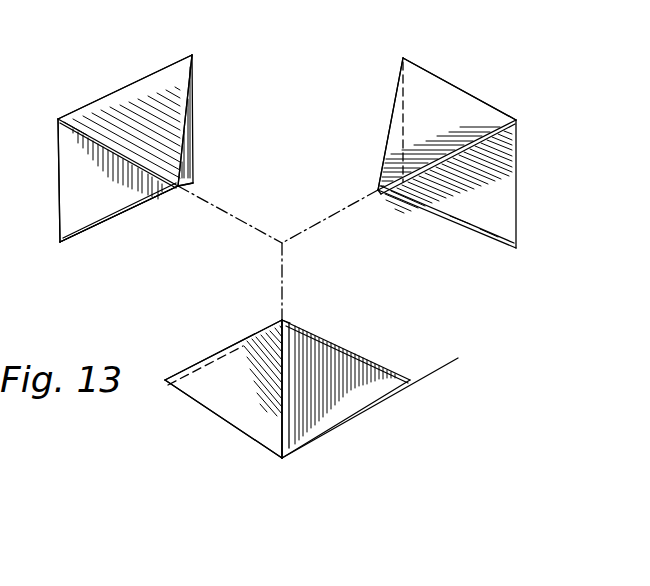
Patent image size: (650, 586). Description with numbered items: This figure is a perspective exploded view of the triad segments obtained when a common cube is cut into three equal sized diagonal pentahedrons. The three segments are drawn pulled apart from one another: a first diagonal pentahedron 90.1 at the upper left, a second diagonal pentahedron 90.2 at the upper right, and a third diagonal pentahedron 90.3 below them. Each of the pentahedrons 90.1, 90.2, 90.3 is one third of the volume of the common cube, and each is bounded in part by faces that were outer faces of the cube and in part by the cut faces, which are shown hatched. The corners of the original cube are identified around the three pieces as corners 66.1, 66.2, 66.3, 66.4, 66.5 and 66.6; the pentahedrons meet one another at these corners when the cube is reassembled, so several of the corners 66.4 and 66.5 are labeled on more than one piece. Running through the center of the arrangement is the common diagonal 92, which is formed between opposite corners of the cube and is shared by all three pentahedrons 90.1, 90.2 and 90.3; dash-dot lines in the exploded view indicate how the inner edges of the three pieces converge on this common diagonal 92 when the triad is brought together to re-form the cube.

The diagonal pentahedron 90.1 is at (68, 200).
The diagonal pentahedron 90.2 is at (450, 100).
The diagonal pentahedron 90.3 is at (350, 410).
The cube corner 66.1 is at (403, 58).
The cube corner 66.2 is at (280, 320).
The cube corner 66.3 is at (254, 288).
The cube corner 66.4 is at (298, 318).
The cube corner 66.5 is at (60, 243).
The cube corner 66.6 is at (282, 458).
The common diagonal 92 is at (193, 165).